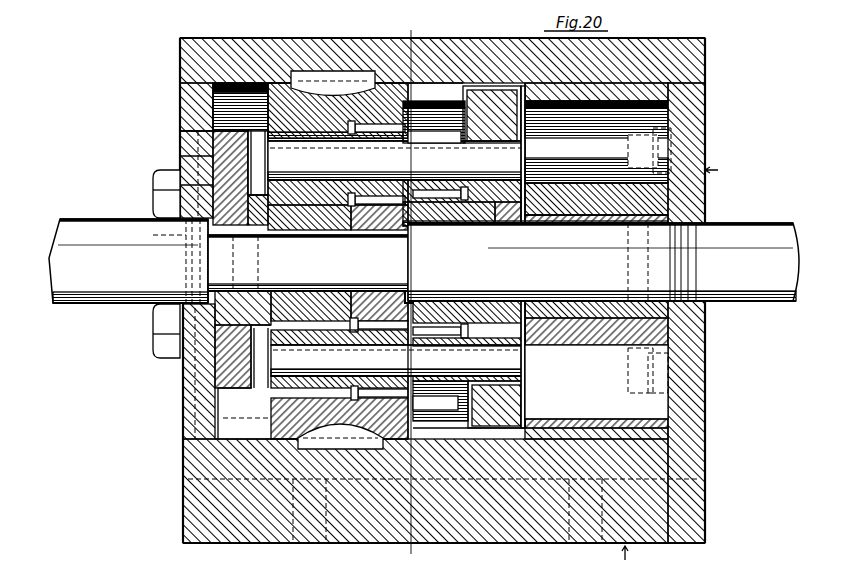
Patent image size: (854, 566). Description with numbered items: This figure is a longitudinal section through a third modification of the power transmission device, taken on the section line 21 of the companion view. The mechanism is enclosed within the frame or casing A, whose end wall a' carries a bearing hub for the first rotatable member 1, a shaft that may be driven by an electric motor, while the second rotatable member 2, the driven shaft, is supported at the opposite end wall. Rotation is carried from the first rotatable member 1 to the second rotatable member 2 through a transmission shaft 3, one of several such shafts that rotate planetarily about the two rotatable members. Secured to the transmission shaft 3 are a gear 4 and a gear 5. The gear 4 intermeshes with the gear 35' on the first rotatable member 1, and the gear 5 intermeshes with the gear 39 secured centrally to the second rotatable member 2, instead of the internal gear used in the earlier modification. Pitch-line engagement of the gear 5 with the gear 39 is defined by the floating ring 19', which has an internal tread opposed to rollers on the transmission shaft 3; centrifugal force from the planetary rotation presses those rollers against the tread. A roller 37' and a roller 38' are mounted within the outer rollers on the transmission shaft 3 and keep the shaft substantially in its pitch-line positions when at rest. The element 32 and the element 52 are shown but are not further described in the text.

The first rotatable member 1 is at (82, 296).
The second rotatable member 2 is at (741, 296).
The transmission shaft 3 is at (396, 160).
The gear 4 is at (353, 115).
The gear 5 is at (426, 128).
The floating ring 19' is at (495, 82).
The section line 21 is at (406, 23).
The lower shaft 32 is at (398, 360).
The gear 35' is at (429, 277).
The roller 37' is at (155, 272).
The roller 38' is at (581, 217).
The gear 39 is at (434, 205).
The pin 52 is at (418, 392).
The end wall a' is at (277, 417).
The frame A is at (676, 366).